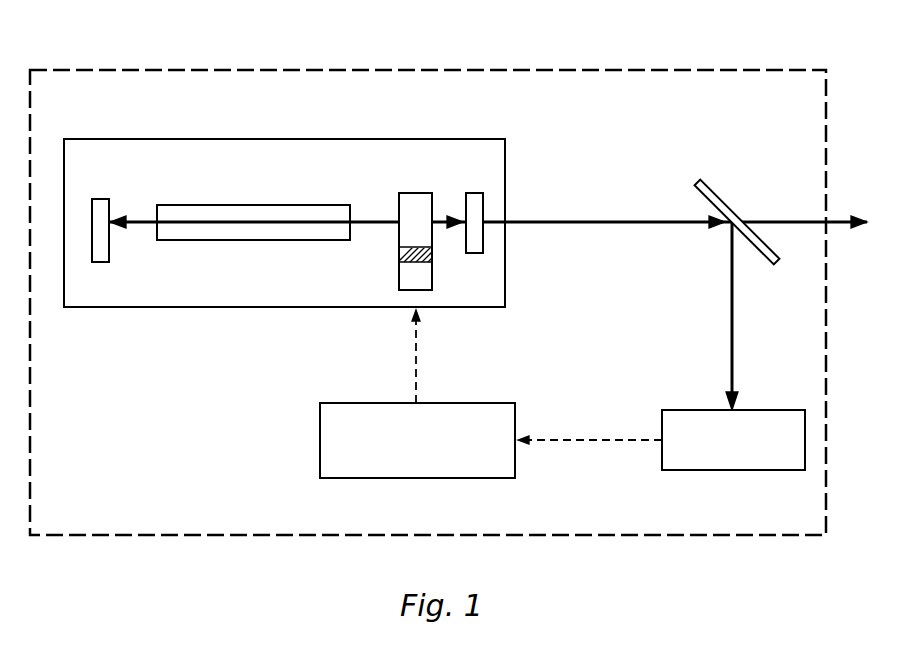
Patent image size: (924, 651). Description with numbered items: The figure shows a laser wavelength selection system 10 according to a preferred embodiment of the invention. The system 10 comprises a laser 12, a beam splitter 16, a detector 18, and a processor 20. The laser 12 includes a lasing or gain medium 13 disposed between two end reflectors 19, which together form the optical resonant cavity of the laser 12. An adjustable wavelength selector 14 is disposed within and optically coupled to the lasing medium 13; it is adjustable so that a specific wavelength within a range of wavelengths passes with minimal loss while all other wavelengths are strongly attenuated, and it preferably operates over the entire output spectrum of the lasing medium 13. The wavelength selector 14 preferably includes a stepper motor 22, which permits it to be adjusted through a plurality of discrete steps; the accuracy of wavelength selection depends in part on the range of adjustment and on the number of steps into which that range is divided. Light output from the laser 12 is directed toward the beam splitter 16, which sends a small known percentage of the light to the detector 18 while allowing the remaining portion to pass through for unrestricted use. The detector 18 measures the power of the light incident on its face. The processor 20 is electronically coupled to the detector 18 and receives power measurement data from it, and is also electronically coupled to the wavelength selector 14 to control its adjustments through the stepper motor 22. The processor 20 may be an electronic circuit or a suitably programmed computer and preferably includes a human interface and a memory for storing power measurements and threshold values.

The laser wavelength selection system 10 is at (196, 64).
The laser 12 is at (226, 312).
The lasing medium 13 is at (417, 134).
The wavelength selector 14 is at (474, 186).
The beam splitter 16 is at (746, 202).
The detector 18 is at (655, 468).
The end reflectors 19 is at (100, 272).
The processor 20 is at (312, 450).
The stepper motor 22 is at (396, 279).